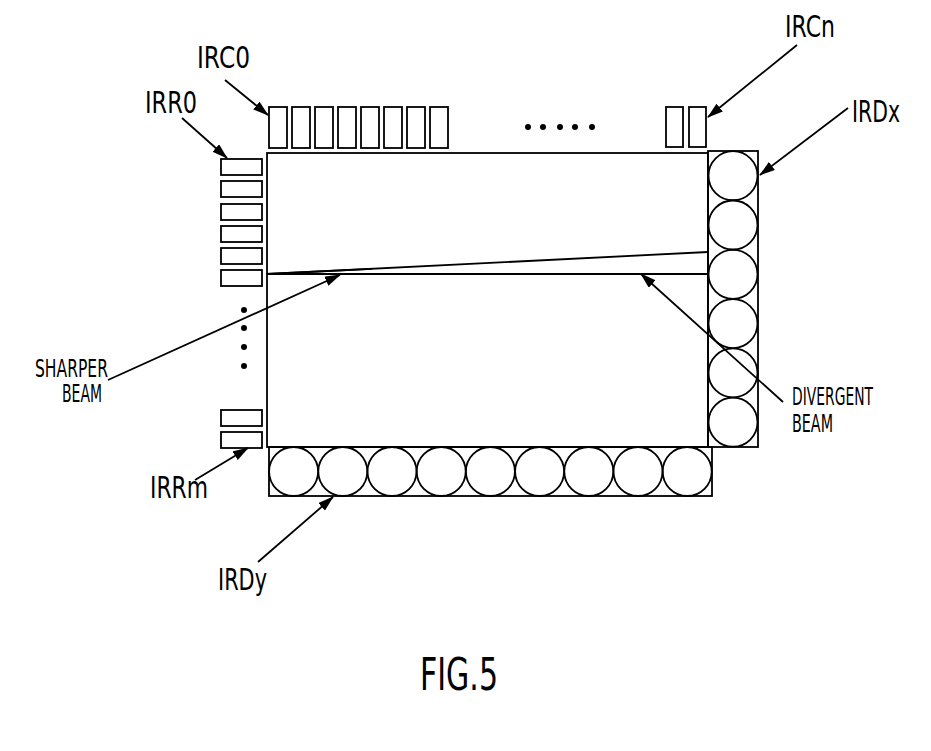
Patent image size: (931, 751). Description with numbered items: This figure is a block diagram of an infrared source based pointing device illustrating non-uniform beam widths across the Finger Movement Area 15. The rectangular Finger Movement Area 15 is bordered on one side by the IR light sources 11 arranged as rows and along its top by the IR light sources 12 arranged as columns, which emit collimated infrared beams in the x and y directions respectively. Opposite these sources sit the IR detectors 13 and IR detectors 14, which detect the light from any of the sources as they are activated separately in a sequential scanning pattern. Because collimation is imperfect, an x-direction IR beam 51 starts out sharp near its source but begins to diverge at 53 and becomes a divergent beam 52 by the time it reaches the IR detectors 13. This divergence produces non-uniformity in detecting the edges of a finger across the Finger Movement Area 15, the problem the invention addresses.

The infrared light sources 11 is at (212, 450).
The infrared light sources 12 is at (267, 95).
The IR detectors 13 is at (767, 296).
The IR detectors 14 is at (490, 507).
The Finger Movement Area 15 is at (483, 406).
The x-direction IR beam 51 is at (550, 260).
The divergent beam 52 is at (547, 275).
The divergence point 53 is at (370, 270).